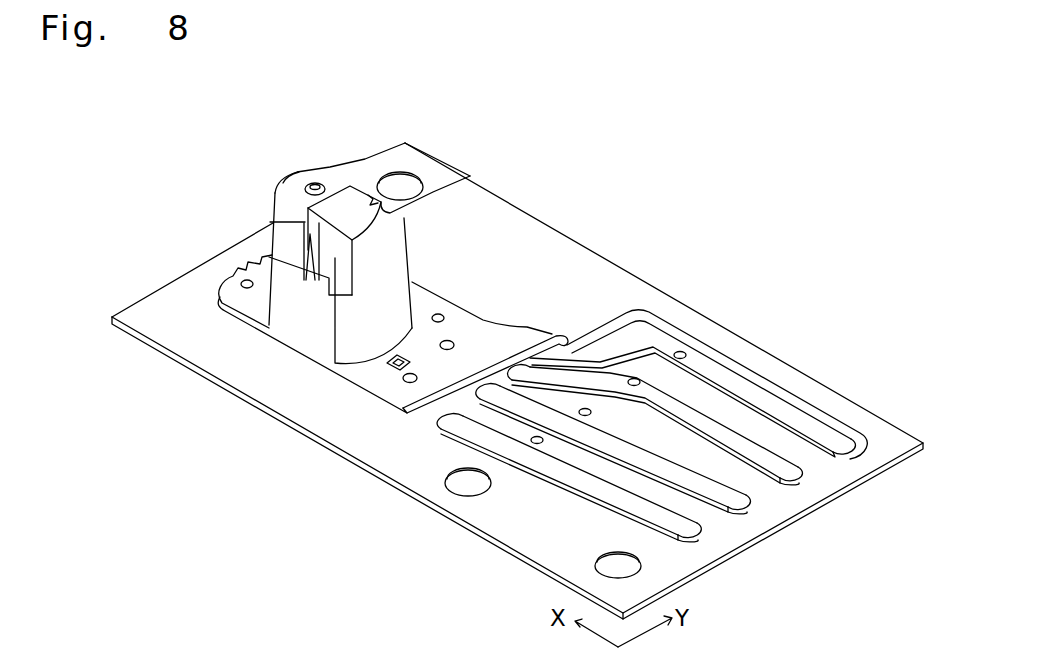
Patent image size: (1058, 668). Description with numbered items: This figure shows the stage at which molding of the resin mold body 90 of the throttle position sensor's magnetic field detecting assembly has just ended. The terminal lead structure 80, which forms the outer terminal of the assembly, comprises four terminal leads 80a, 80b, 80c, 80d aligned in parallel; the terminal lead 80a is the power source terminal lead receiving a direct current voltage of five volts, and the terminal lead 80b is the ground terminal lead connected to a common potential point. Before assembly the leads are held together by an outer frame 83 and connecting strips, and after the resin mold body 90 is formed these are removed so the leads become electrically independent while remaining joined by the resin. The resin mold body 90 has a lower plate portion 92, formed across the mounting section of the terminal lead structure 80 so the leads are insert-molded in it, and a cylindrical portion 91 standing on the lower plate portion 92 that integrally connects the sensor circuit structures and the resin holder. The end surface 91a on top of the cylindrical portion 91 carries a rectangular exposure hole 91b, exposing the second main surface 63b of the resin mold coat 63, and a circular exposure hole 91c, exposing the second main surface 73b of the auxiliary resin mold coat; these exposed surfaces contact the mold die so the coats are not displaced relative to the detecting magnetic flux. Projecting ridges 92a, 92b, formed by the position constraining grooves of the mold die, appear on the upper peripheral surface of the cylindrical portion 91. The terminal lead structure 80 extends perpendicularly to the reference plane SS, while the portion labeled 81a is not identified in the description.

The terminal lead structure 80 is at (517, 427).
The power source terminal lead 80a is at (796, 478).
The GND terminal lead 80b is at (745, 505).
The terminal lead 80c is at (690, 530).
The terminal lead 80d is at (850, 450).
The plate surface portion 81a is at (590, 498).
The outer frame 83 is at (662, 306).
The reference plane SS is at (703, 363).
The resin mold body 90 is at (382, 253).
The cylindrical portion 91 is at (361, 228).
The end surface 91a is at (318, 178).
The rectangular exposure hole 91b is at (460, 177).
The circular exposure hole 91c is at (308, 181).
The second main surface 73b is at (304, 190).
The lower plate portion 92 is at (396, 254).
The projecting ridge 92a is at (402, 147).
The projecting ridge 92b is at (303, 233).
The resin mold coat 63 is at (337, 200).
The second main surface 63b is at (344, 200).